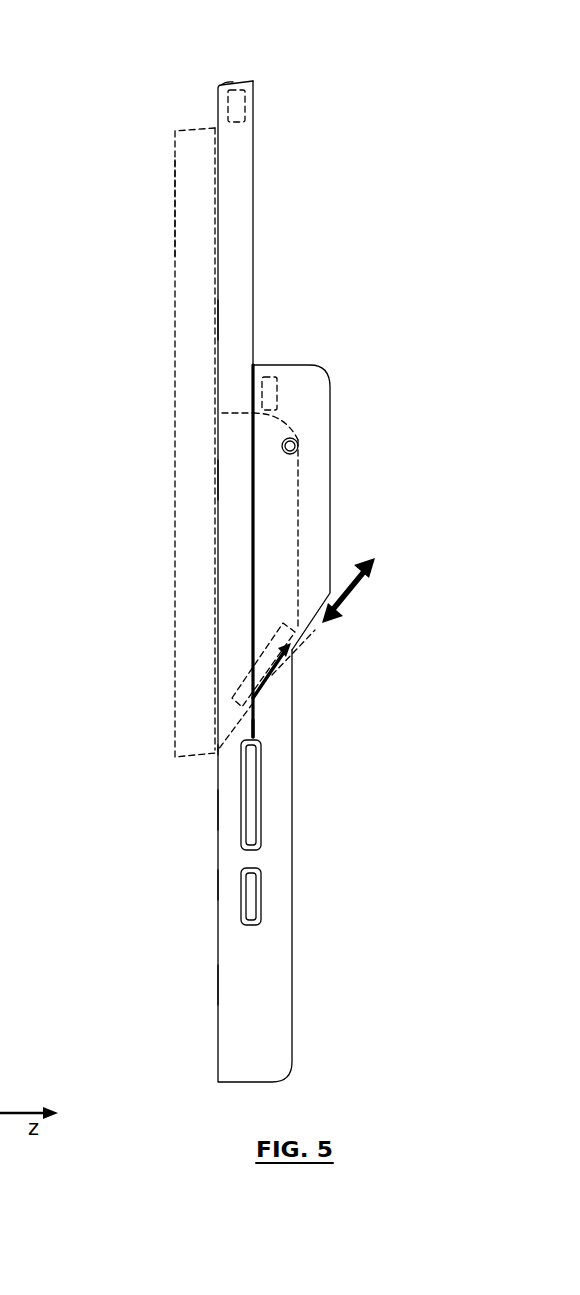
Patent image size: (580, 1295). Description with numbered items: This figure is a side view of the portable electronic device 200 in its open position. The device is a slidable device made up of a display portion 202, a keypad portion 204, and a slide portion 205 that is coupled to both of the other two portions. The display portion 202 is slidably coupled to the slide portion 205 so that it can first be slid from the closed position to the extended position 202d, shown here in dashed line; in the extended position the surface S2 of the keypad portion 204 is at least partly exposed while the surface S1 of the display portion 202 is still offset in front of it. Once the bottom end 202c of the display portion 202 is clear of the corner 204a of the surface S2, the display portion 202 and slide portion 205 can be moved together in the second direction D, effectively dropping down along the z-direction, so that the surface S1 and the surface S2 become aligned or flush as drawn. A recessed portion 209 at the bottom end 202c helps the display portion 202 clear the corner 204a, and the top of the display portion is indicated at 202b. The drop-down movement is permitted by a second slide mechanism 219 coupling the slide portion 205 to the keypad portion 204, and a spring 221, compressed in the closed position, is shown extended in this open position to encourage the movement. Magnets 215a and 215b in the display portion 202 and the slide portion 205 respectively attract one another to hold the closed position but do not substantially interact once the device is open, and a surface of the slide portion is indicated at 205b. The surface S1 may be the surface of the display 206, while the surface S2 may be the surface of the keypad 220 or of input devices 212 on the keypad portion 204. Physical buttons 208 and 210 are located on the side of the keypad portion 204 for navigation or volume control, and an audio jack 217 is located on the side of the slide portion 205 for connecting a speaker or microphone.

The portable electronic device 200 is at (289, 156).
The display portion 202 is at (231, 216).
The top end of first housing portion 202b is at (220, 85).
The bottom end of the display portion 202c is at (246, 736).
The extended position 202d is at (175, 205).
The keypad portion 204 is at (270, 1018).
The corner of the keypad portion 204a is at (217, 750).
The slide portion 205 is at (307, 387).
The surface of latch block 205b is at (298, 510).
The display 206 is at (215, 332).
The physical button 208 is at (253, 828).
The recessed portion 209 is at (260, 745).
The physical button 210 is at (253, 900).
The input devices 212 is at (207, 812).
The magnet 215a is at (243, 99).
The magnet 215b is at (275, 387).
The audio jack 217 is at (292, 444).
The second slide mechanism 219 is at (317, 643).
The keypad 220 is at (207, 986).
The spring 221 is at (300, 697).
The second direction D is at (352, 593).
The surface of the display portion S1 is at (207, 484).
The surface of the keypad portion S2 is at (207, 885).